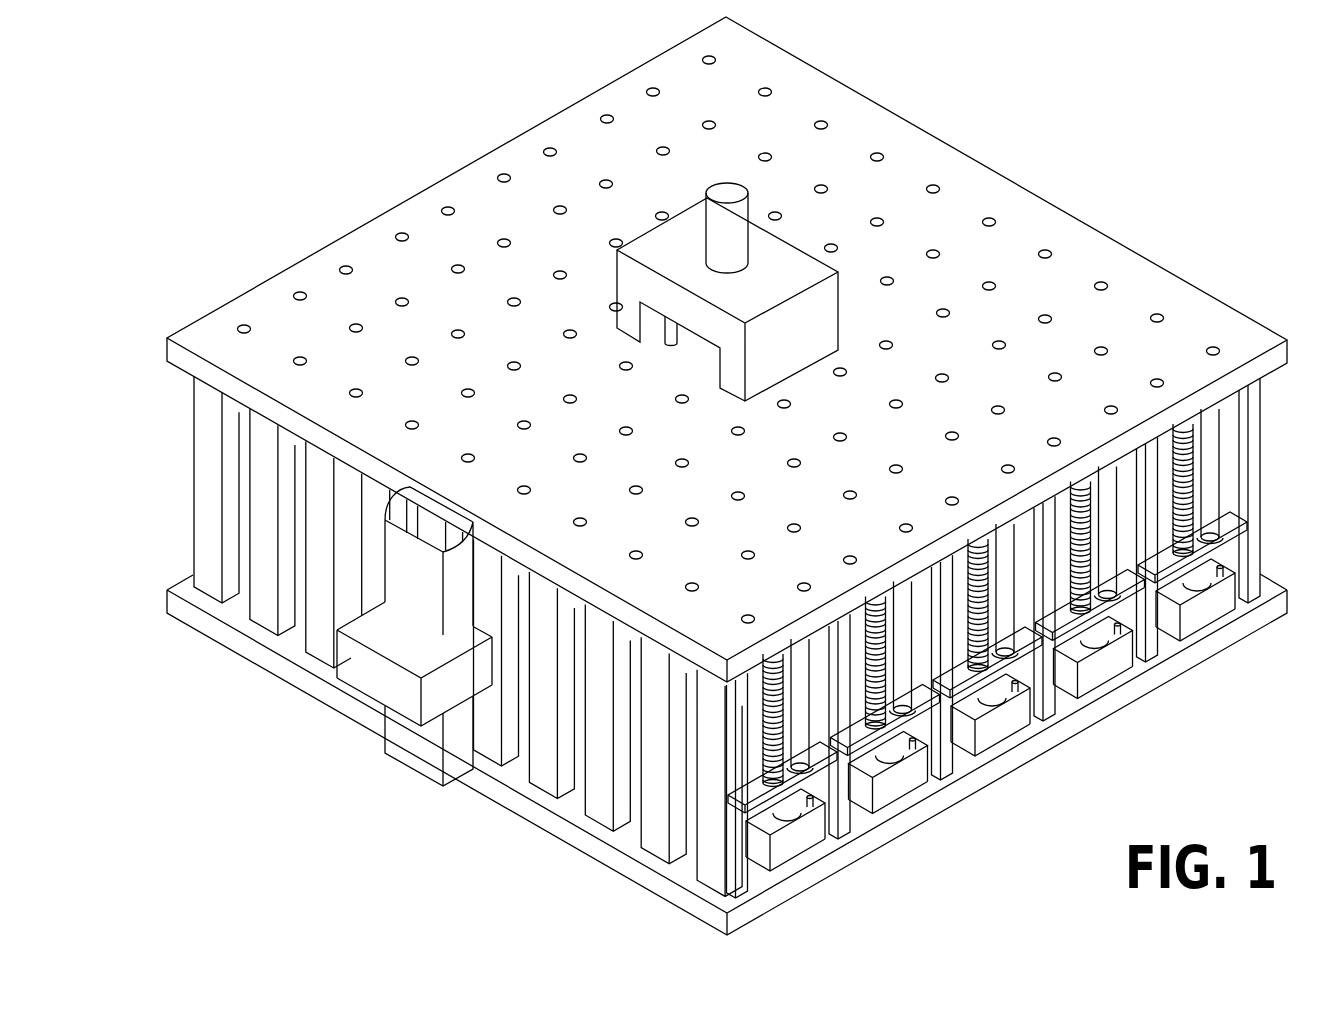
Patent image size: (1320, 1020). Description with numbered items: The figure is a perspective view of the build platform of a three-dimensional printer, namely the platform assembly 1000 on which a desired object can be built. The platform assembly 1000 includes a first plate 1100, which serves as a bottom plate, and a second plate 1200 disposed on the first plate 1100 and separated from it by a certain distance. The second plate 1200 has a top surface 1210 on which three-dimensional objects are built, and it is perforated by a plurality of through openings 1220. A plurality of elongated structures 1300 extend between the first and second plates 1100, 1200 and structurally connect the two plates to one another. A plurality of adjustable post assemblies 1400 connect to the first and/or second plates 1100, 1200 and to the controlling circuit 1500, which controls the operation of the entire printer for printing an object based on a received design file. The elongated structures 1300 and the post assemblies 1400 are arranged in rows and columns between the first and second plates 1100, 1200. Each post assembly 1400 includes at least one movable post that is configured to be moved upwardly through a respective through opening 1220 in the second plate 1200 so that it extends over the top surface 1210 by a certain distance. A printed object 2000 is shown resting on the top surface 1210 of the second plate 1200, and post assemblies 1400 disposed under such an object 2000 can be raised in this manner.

The platform assembly 1000 is at (300, 112).
The first plate 1100 is at (167, 593).
The second plate 1200 is at (167, 340).
The top surface 1210 is at (267, 300).
The through opening 1220 is at (343, 267).
The elongated structures 1300 is at (197, 430).
The adjustable post assemblies 1400 is at (1135, 717).
The controlling circuit 1500 is at (368, 685).
The 3D printed object 2000 is at (793, 248).